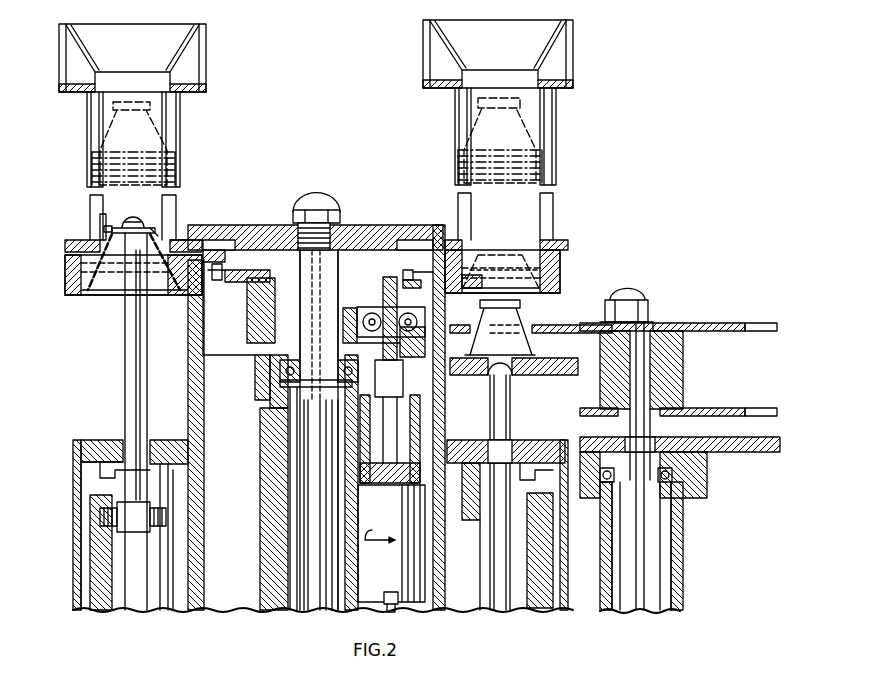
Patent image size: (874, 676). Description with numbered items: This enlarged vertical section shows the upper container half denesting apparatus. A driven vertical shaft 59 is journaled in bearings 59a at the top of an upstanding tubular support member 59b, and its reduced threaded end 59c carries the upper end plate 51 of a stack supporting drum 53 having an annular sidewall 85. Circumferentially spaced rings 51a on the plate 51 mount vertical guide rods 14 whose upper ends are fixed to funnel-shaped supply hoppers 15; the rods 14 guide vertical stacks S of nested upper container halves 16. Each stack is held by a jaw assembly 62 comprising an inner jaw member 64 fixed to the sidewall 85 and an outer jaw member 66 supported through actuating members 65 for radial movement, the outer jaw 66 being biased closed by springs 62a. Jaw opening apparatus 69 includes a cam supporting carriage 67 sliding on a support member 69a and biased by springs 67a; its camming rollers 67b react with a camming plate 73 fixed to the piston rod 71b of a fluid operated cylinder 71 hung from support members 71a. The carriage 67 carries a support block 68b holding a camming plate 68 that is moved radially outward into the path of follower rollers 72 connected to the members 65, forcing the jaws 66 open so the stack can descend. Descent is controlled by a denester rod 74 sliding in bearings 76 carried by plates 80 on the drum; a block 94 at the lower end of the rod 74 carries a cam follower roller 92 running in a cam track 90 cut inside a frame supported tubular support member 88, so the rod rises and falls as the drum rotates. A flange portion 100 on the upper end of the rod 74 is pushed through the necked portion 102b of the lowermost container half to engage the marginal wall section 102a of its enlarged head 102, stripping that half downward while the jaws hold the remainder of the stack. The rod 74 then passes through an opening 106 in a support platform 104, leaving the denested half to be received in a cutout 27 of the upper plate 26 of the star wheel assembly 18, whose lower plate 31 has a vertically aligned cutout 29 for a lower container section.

The container half supply hopper 15 is at (206, 42).
The vertical guide rod 14 is at (170, 125).
The upper container half 16 is at (110, 138).
The vertical stack of nested upper container halves S is at (190, 160).
The flange portion 100 is at (133, 218).
The enlarged diameter head 102 is at (104, 226).
The marginal wall section 102a is at (70, 242).
The necked portion 102b is at (152, 232).
The inwardly disposed jaw member 64 is at (185, 290).
The outwardly disposed opposing jaw member 66 is at (65, 282).
The jaw assembly 62 is at (80, 298).
The spring 62a is at (468, 282).
The denester rod 74 is at (125, 383).
The annular sidewall 85 is at (200, 525).
The plate 80 is at (104, 442).
The bearing 76 is at (162, 442).
The tubular support member 88 is at (100, 605).
The block 94 is at (136, 525).
The cam follower roller 92 is at (100, 516).
The cam track 90 is at (100, 524).
The upper end plate 51 is at (400, 225).
The ring 51a is at (180, 240).
The reduced threaded end 59c is at (328, 225).
The stack supporting drum 53 is at (355, 150).
The jaw opening apparatus 69 is at (295, 278).
The camming plate 73 is at (388, 280).
The actuating member 65 is at (425, 272).
The camming roller 67b is at (372, 312).
The cam supporting carriage 67 is at (350, 310).
The camming plate 68 is at (238, 272).
The follower roller 72 is at (216, 282).
The support block 68b is at (260, 322).
The bearing 59a is at (280, 372).
The support member 69a is at (282, 390).
The spring 67a is at (312, 387).
The tubular support member 59b is at (262, 448).
The vertical shaft 59 is at (318, 598).
The support member 71a is at (352, 448).
The piston rod 71b is at (395, 425).
The cylinder 71 is at (391, 548).
The support platform 104 is at (556, 364).
The opening 106 is at (535, 372).
The star wheel assembly 18 is at (697, 243).
The container section-receiving plate 26 is at (712, 322).
The semicircular cutout 27 is at (760, 322).
The container section-receiving plate 31 is at (704, 408).
The semicircular cutout 29 is at (760, 408).